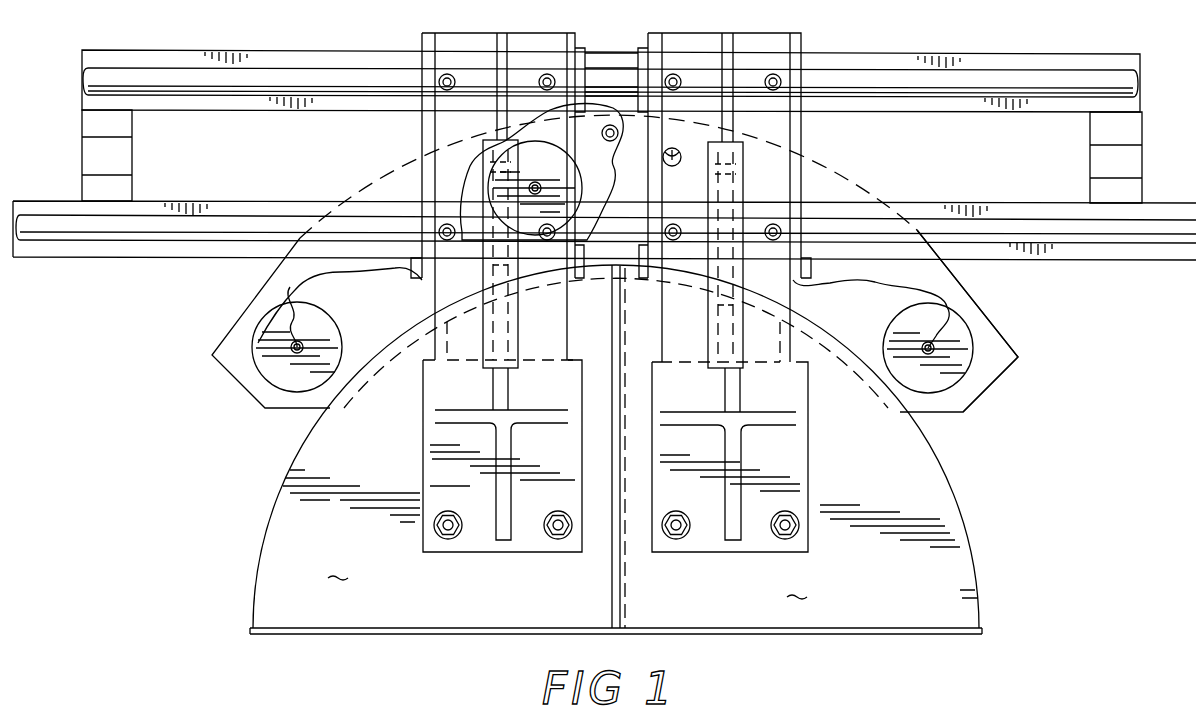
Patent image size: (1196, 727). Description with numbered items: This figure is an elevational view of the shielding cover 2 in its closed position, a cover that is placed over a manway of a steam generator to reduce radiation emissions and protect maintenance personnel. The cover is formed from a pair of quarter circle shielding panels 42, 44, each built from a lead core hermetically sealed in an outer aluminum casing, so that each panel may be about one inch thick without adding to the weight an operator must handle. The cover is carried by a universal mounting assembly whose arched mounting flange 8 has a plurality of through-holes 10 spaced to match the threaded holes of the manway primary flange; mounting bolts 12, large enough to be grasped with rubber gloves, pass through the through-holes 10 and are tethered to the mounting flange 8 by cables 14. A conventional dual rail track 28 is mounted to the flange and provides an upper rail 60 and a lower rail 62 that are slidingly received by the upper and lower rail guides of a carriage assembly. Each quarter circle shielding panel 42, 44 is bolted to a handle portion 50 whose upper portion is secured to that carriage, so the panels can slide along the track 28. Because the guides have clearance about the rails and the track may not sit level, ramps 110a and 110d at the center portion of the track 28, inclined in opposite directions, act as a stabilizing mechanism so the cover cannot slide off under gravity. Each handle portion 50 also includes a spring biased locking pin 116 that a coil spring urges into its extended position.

The shielding cover 2 is at (992, 540).
The mounting flange 8 is at (990, 320).
The through-holes 10 is at (462, 173).
The mounting bolts 12 is at (485, 151).
The cables 14 is at (592, 146).
The dual rail track 28 is at (1043, 54).
The quarter circle shielding panel 42 is at (340, 567).
The quarter circle shielding panel 44 is at (799, 585).
The handle portion 50 is at (745, 197).
The upper rail 60 is at (1141, 80).
The lower rail 62 is at (1165, 236).
The ramp 110a is at (82, 163).
The ramp 110d is at (1142, 141).
The spring biased locking pin 116 is at (666, 162).